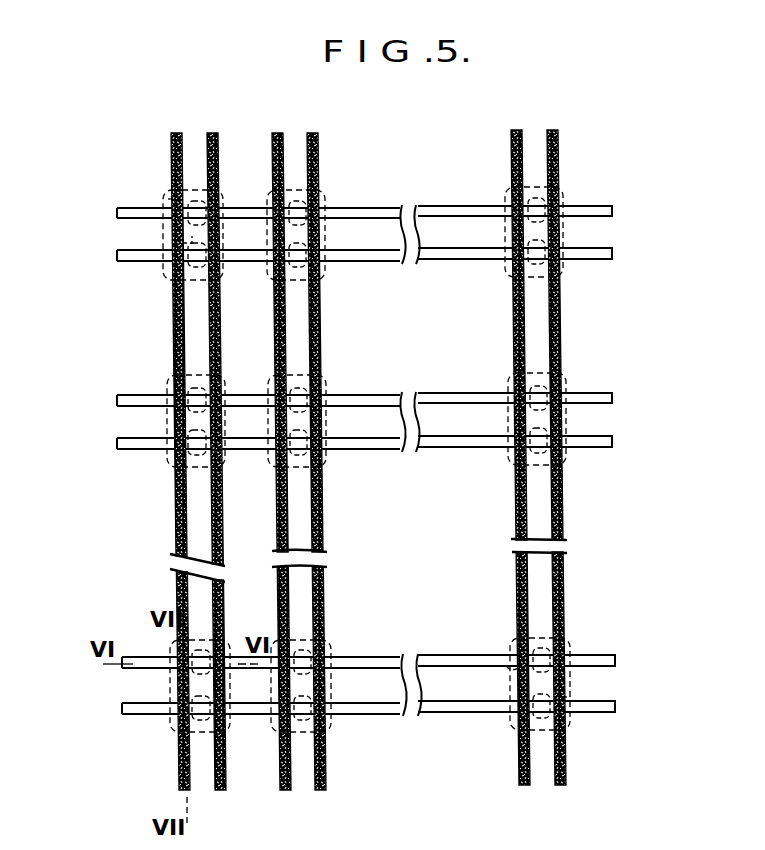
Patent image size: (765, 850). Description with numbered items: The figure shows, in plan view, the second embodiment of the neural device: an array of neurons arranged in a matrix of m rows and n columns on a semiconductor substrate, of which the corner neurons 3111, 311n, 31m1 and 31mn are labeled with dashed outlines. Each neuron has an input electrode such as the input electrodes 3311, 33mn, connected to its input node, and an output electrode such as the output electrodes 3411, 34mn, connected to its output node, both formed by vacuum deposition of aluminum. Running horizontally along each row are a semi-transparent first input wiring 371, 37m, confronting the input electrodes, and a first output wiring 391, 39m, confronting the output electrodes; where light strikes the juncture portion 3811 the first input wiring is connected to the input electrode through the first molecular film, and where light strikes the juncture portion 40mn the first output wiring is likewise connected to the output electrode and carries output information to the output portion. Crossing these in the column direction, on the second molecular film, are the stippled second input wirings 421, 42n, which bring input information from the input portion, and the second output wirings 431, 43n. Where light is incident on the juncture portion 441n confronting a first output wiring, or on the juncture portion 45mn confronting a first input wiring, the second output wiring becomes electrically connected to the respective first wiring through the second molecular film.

The juncture portion 3811 is at (172, 197).
The neuron 3111 is at (192, 187).
The output electrode 3411 is at (215, 178).
The input electrode 3311 is at (168, 238).
The first output wiring 391 is at (364, 207).
The first input wiring 371 is at (366, 261).
The juncture portion 441n is at (558, 192).
The neuron 311n is at (565, 197).
The second output wiring 43n is at (558, 327).
The second input wiring 421 is at (171, 330).
The second output wiring 431 is at (218, 322).
The second input wiring 42n is at (511, 330).
The first output wiring 39m is at (366, 657).
The first input wiring 37m is at (366, 715).
The input electrode 33mn is at (507, 667).
The juncture portion 40mn is at (522, 725).
The output electrode 34mn is at (542, 637).
The neuron 31mn is at (572, 640).
The juncture portion 45mn is at (567, 697).
The neuron 31m1 is at (172, 722).